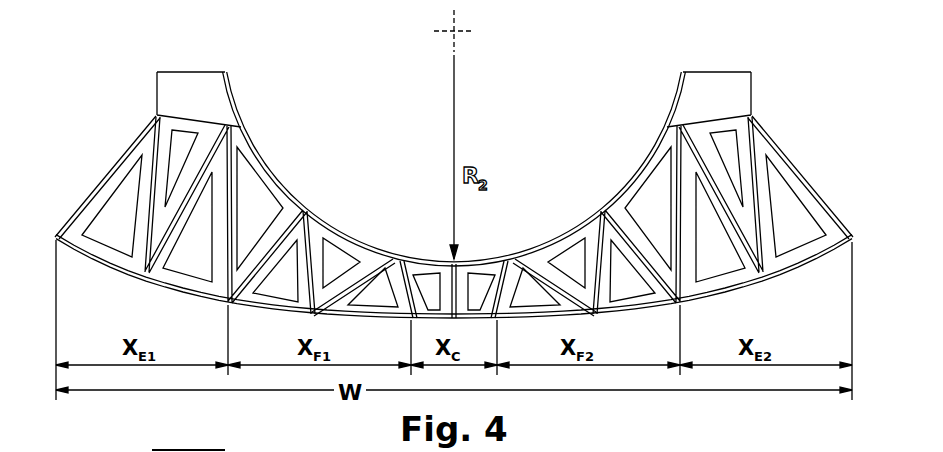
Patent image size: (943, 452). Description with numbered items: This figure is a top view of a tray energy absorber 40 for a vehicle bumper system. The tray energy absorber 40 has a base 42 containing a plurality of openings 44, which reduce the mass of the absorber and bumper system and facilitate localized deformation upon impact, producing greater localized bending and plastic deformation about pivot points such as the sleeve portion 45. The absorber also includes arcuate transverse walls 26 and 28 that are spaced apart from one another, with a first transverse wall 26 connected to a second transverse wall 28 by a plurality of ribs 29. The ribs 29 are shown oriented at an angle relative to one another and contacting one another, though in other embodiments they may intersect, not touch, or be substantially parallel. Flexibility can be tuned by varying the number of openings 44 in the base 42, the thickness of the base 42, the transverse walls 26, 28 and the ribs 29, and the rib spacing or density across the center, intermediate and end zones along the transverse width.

The tray energy absorber 40 is at (128, 75).
The sleeve portion 45 is at (177, 87).
The base 42 is at (237, 139).
The openings 44 is at (285, 277).
The first transverse wall 26 is at (620, 310).
The second transverse wall 28 is at (607, 208).
The ribs 29 is at (757, 178).